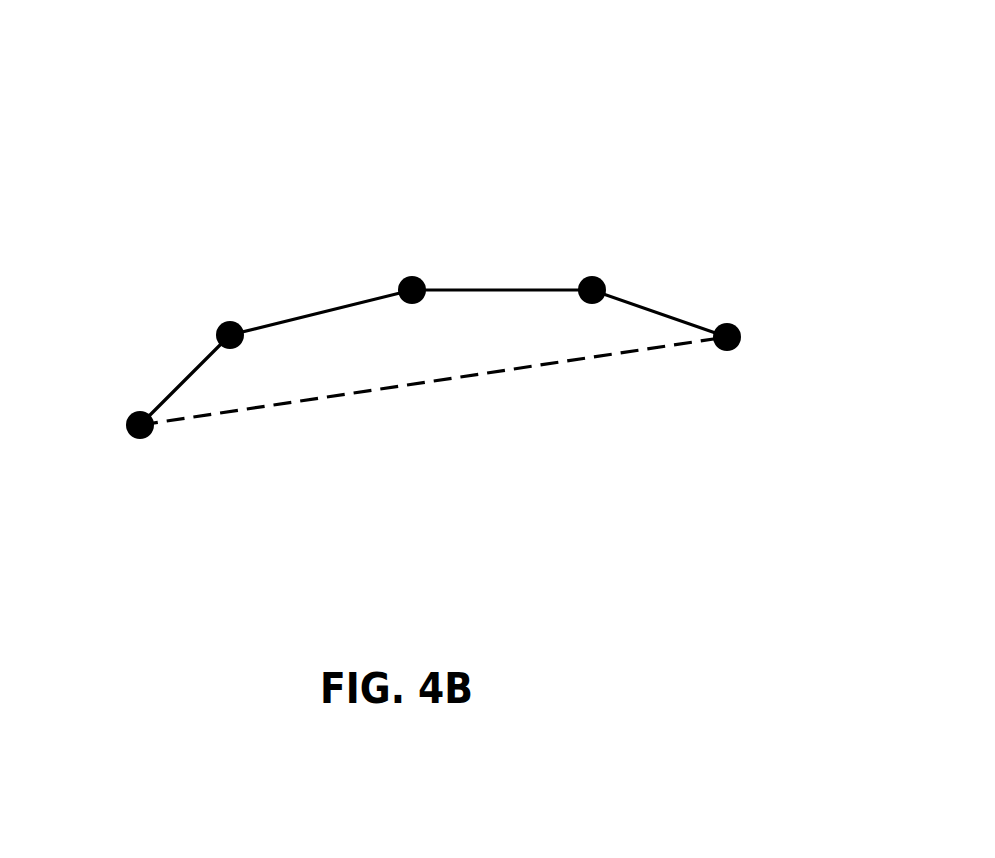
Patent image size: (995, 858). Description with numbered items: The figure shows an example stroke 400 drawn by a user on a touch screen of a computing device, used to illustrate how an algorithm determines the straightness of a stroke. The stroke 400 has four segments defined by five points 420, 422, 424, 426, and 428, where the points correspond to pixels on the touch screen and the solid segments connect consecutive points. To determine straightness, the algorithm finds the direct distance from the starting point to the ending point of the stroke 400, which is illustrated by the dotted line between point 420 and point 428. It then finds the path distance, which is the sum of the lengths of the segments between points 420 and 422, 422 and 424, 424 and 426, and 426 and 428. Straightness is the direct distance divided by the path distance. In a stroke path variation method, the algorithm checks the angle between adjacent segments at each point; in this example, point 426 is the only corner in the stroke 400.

The stroke 400 is at (499, 104).
The point 420 is at (733, 324).
The point 422 is at (598, 278).
The point 424 is at (410, 277).
The point 426 is at (222, 318).
The point 428 is at (132, 413).